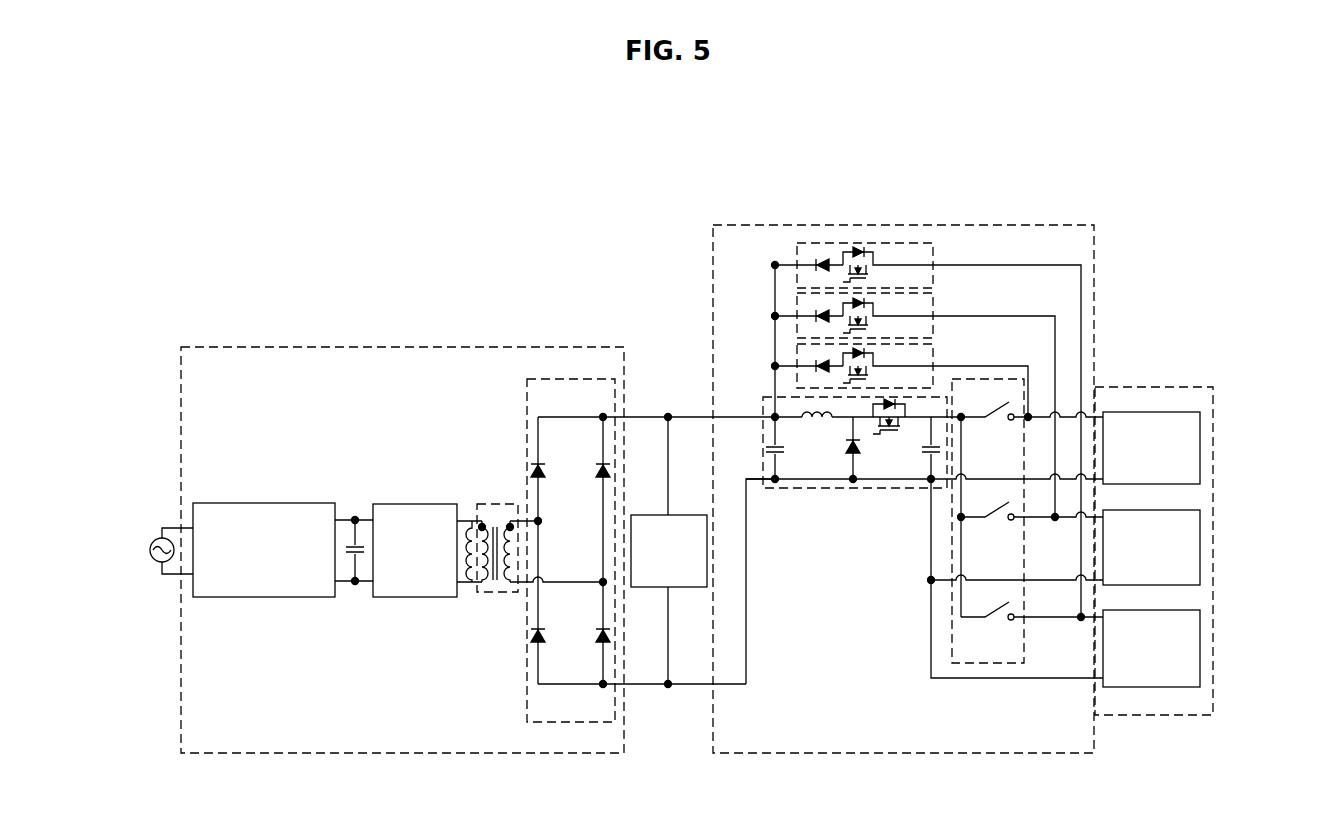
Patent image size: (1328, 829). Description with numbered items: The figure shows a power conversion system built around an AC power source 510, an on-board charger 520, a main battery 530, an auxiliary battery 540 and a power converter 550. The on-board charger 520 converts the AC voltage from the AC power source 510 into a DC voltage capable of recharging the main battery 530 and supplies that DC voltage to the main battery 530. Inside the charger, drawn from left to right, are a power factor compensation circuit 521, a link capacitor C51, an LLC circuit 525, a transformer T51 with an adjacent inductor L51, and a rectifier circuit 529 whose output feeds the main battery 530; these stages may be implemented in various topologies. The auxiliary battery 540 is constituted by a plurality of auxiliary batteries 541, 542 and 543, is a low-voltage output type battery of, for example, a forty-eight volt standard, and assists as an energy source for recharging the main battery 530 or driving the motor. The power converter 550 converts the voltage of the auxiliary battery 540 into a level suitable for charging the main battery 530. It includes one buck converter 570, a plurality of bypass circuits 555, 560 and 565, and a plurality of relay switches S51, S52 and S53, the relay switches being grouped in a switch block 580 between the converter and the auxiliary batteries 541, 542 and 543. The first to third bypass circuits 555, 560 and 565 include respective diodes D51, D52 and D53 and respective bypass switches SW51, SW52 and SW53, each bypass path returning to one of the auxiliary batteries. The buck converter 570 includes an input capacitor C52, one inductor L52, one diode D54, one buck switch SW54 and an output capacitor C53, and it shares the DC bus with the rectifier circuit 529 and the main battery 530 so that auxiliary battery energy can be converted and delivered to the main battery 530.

The AC power source 510 is at (154, 540).
The on-board charger 520 is at (438, 347).
The power factor compensation circuit 521 is at (293, 503).
The LLC circuit 525 is at (422, 504).
The rectifier circuit 529 is at (563, 379).
The main battery 530 is at (680, 588).
The auxiliary battery 540 is at (1187, 516).
The first auxiliary battery 541 is at (1200, 447).
The second auxiliary battery 542 is at (1200, 547).
The third auxiliary battery 543 is at (1200, 647).
The power converter 550 is at (975, 225).
The first bypass circuit 555 is at (797, 382).
The second bypass circuit 560 is at (797, 333).
The third bypass circuit 565 is at (797, 282).
The buck converter 570 is at (915, 479).
The switch unit 580 is at (1027, 475).
The link capacitor C51 is at (357, 585).
The inductor L51 is at (475, 568).
The transformer T51 is at (479, 504).
The capacitor C52 is at (755, 448).
The inductor L52 is at (816, 426).
The diode D54 is at (835, 448).
The buck switch SW54 is at (888, 427).
The capacitor C53 is at (918, 448).
The diode D51 is at (818, 381).
The diode D52 is at (818, 331).
The diode D53 is at (818, 281).
The bypass switch SW51 is at (902, 355).
The bypass switch SW52 is at (902, 305).
The bypass switch SW53 is at (902, 255).
The relay switch S51 is at (1032, 423).
The relay switch S52 is at (1032, 523).
The relay switch S53 is at (1032, 623).